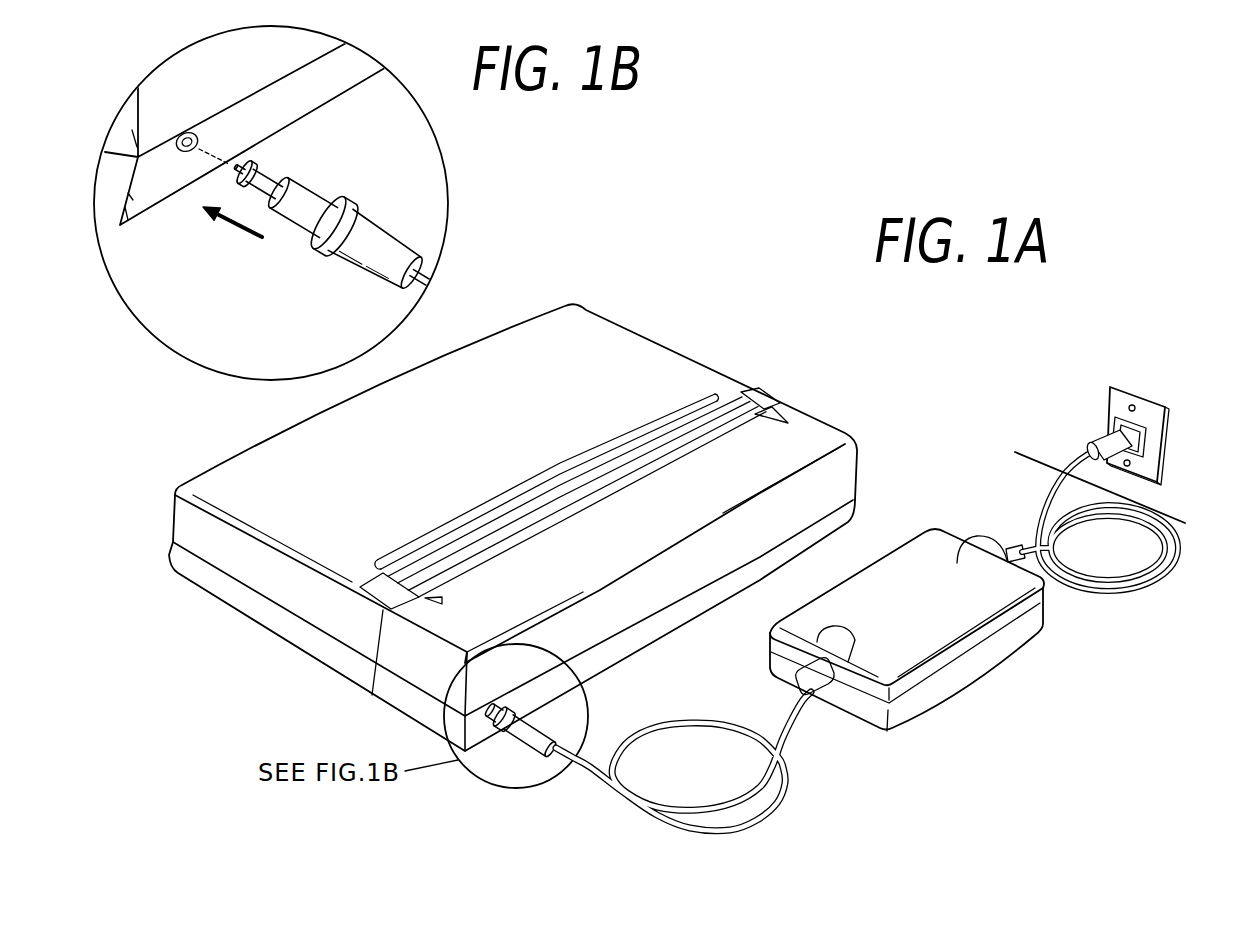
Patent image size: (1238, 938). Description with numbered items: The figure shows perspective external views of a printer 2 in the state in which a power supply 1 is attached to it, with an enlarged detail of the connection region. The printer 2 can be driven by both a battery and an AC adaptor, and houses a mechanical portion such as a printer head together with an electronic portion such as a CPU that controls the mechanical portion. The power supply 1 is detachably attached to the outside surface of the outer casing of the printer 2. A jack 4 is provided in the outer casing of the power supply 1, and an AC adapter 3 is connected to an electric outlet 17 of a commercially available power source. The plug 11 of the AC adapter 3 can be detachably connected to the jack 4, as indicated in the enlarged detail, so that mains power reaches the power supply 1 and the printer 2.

In FIG. 1A, the power supply 1 is at (513, 474).
In FIG. 1A, the printer 2 is at (586, 328).
In FIG. 1A, the AC adapter 3 is at (921, 565).
In FIG. 1B, the jack 4 is at (205, 135).
In FIG. 1B, the plug 11 is at (314, 198).
In FIG. 1A, the electric outlet 17 is at (1147, 415).